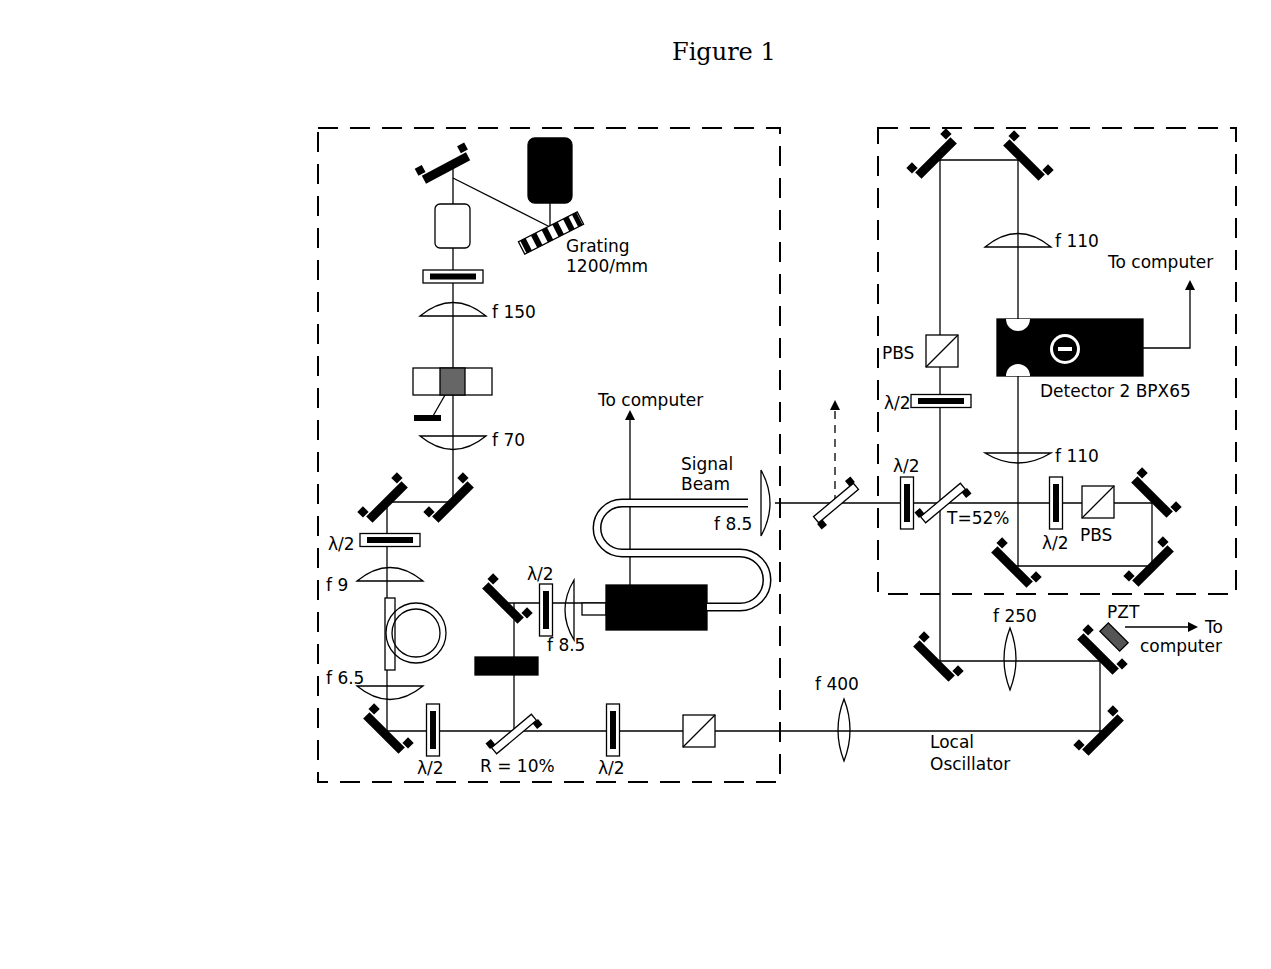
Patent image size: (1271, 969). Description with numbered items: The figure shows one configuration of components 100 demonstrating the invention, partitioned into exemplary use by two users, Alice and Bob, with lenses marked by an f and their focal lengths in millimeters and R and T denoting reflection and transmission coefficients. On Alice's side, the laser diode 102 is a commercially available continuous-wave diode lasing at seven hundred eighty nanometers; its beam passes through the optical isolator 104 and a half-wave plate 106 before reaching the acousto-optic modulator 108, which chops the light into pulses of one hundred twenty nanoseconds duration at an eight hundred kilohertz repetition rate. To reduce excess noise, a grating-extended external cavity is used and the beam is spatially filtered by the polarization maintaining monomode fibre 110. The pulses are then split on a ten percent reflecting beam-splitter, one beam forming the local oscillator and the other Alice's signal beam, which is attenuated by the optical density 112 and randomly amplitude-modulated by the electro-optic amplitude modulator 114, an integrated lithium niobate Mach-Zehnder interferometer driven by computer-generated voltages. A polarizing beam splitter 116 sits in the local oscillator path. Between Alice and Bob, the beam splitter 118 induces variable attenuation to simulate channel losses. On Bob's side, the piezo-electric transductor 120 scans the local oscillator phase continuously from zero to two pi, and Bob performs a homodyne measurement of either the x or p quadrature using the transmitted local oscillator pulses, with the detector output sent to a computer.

The quantum key distribution system 100 is at (208, 126).
The laser diode 102 is at (573, 196).
The optical isolator 104 is at (433, 225).
The half-wave plate 106 is at (430, 285).
The acousto-optic modulator 108 is at (495, 376).
The polarization maintaining monomode fibre 110 is at (426, 606).
The optical density 112 is at (540, 667).
The electro-optic amplitude modulator 114 is at (695, 635).
The polarizing beam splitter 116 is at (745, 698).
The beam splitter 118 is at (818, 525).
The piezo-electric transductor 120 is at (1122, 647).